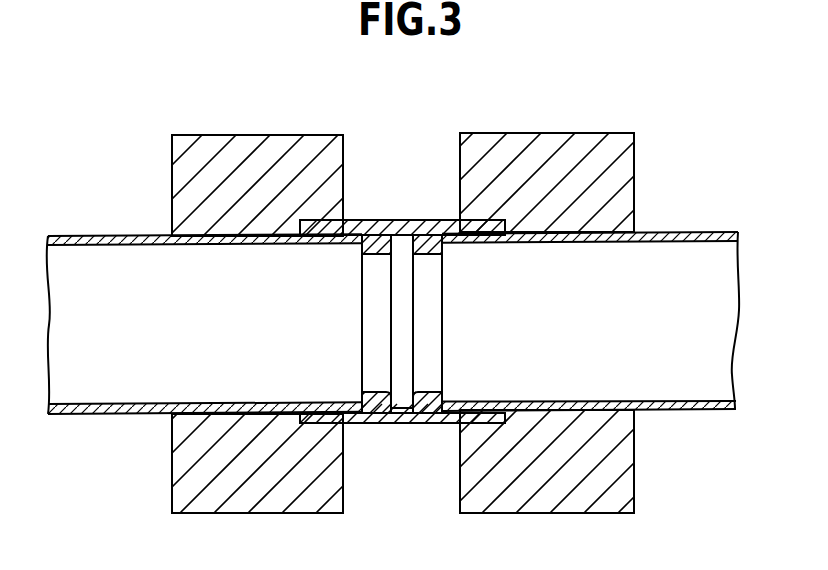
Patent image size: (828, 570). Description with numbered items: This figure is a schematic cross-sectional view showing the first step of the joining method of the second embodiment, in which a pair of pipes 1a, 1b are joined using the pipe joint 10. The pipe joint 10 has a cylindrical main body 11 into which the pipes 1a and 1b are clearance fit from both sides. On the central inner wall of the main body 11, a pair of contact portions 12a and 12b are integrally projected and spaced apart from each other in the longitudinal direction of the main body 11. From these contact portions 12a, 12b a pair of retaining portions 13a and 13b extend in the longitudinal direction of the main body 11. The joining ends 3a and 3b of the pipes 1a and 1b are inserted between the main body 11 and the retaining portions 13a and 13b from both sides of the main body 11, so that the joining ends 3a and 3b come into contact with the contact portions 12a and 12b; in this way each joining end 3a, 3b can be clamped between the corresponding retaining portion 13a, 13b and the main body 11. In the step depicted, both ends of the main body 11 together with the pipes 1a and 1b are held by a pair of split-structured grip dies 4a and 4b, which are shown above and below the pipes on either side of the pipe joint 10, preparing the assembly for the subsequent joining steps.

The pipe 1a is at (664, 232).
The pipe 1b is at (81, 418).
The joining end 3a is at (447, 393).
The joining end 3b is at (360, 395).
The grip die 4a is at (522, 133).
The grip die 4b is at (222, 143).
The pipe joint 10 is at (393, 148).
The cylindrical main body 11 is at (395, 221).
The contact portion 12a is at (420, 410).
The contact portion 12b is at (378, 410).
The retaining portion 13a is at (437, 250).
The retaining portion 13b is at (360, 250).